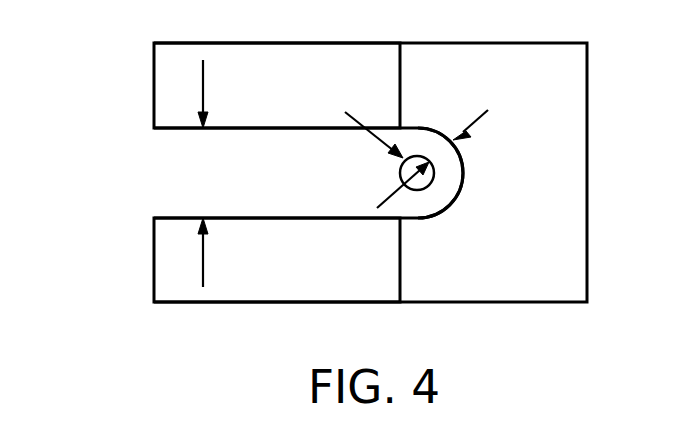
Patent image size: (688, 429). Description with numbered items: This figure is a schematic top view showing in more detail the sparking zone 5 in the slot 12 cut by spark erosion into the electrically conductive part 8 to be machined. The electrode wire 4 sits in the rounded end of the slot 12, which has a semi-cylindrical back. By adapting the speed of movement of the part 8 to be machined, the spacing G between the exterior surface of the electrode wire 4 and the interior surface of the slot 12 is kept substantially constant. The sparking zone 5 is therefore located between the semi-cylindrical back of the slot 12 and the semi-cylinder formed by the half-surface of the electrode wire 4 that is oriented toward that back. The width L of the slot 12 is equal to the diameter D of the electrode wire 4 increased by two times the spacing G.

The electrode wire 4 is at (400, 173).
The sparking zone 5 is at (423, 143).
The part to be machined 8 is at (173, 263).
The slot 12 is at (190, 167).
The width of the slot L is at (213, 170).
The spacing G is at (428, 125).
The diameter of the electrode wire D is at (432, 188).